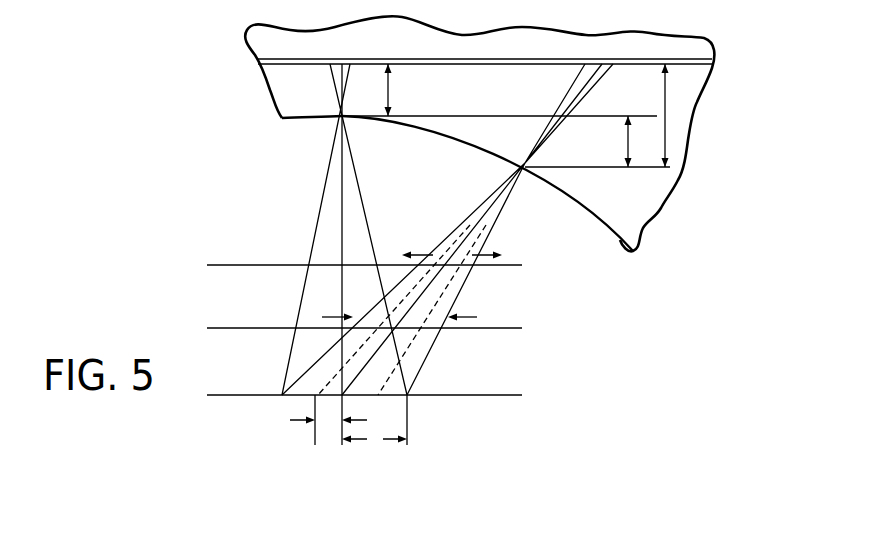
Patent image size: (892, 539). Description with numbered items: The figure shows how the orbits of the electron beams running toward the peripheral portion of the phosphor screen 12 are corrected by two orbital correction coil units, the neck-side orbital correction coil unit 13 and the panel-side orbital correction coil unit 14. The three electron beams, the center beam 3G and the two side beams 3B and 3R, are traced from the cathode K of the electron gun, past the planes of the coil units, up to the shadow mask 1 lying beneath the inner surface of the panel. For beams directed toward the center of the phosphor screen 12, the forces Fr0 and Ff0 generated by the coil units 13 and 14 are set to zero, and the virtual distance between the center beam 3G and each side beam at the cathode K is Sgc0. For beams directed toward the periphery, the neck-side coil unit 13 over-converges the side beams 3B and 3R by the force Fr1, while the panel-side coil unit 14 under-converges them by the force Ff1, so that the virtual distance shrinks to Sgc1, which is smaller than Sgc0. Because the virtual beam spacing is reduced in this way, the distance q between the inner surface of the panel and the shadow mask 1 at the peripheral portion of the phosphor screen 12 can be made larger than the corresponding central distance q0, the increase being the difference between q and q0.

The phosphor screen 12 is at (693, 72).
The shadow mask 1 is at (577, 197).
The panel-side orbital correction coil unit 14 is at (381, 267).
The neck-side orbital correction coil unit 13 is at (381, 328).
The cathode K is at (374, 395).
The distance between panel inner surface and shadow mask at screen center q0 is at (499, 90).
The distance between panel inner surface and shadow mask at screen periphery q is at (689, 121).
The force of panel-side coil unit for center beams Ff0 is at (226, 249).
The force of neck-side coil unit for center beams Fr0 is at (280, 311).
The force of panel-side coil unit for peripheral beams Ff1 is at (483, 245).
The force of neck-side coil unit for peripheral beams Fr1 is at (463, 312).
The side beam 3R is at (278, 403).
The center beam 3G is at (409, 398).
The side beam 3B is at (343, 400).
The virtual beam distance at screen periphery Sgc1 is at (330, 428).
The virtual beam distance at screen center Sgc0 is at (375, 440).